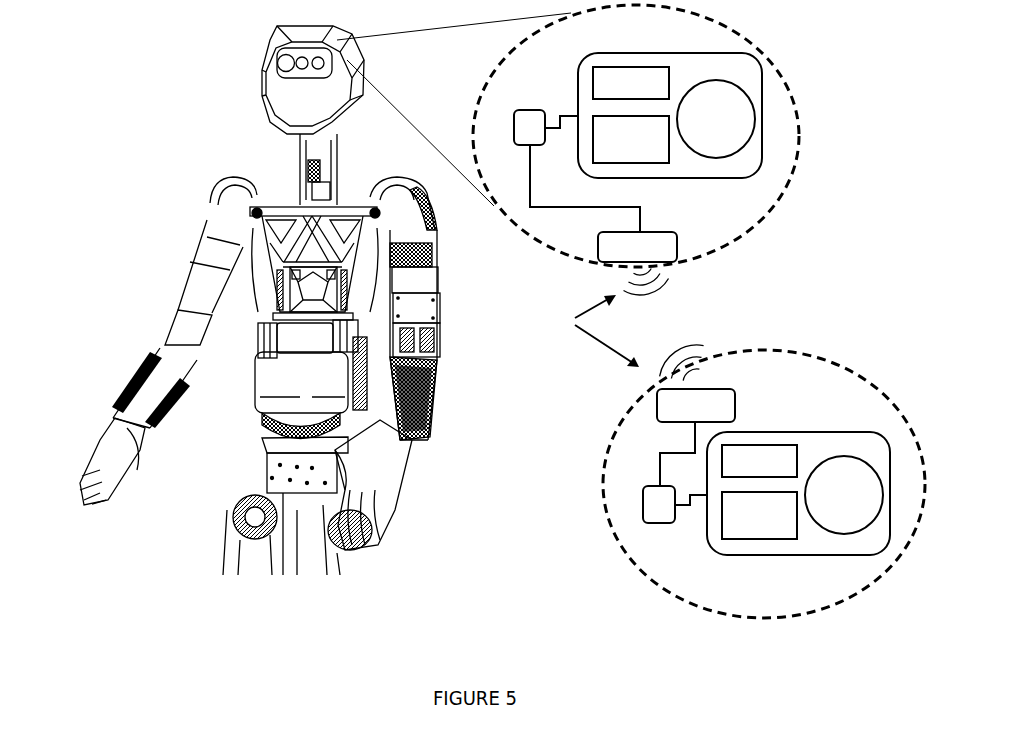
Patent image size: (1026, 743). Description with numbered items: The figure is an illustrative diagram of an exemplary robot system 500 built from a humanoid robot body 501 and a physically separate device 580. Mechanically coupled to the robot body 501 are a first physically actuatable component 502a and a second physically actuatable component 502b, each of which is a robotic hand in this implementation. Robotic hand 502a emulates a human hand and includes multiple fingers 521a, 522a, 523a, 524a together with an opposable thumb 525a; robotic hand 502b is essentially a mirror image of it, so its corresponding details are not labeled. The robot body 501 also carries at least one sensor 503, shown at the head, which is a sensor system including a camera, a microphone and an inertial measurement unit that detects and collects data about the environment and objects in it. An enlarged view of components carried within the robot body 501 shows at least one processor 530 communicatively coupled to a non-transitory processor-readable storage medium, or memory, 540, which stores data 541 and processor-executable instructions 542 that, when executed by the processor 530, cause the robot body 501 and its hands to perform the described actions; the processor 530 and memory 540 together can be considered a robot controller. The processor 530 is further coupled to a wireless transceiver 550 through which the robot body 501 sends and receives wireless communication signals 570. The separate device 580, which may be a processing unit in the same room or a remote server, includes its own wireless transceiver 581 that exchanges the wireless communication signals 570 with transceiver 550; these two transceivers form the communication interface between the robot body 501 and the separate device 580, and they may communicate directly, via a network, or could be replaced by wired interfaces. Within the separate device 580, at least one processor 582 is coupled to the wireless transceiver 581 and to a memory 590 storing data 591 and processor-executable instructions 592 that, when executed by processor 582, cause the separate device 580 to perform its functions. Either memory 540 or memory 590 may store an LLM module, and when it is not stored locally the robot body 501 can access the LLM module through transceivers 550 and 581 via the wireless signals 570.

The robot system 500 is at (124, 97).
The robot body 501 is at (281, 225).
The first physically actuatable component 502a is at (105, 443).
The second physically actuatable component 502b is at (392, 475).
The sensor 503 is at (281, 67).
The finger 521a is at (83, 470).
The finger 522a is at (76, 484).
The finger 523a is at (88, 507).
The finger 524a is at (98, 495).
The opposable thumb 525a is at (125, 428).
The processor 530 is at (520, 120).
The non-transitory processor-readable storage medium 540 is at (663, 172).
The data 541 is at (627, 96).
The processor-executable instructions 542 is at (627, 150).
The wireless transceiver 550 is at (652, 258).
The wireless communication signals 570 is at (623, 323).
The separate device 580 is at (658, 582).
The wireless transceiver 581 is at (707, 410).
The processor 582 is at (645, 505).
The non-transitory processor-readable storage medium 590 is at (791, 547).
The data 591 is at (755, 472).
The processor-executable instructions 592 is at (755, 524).